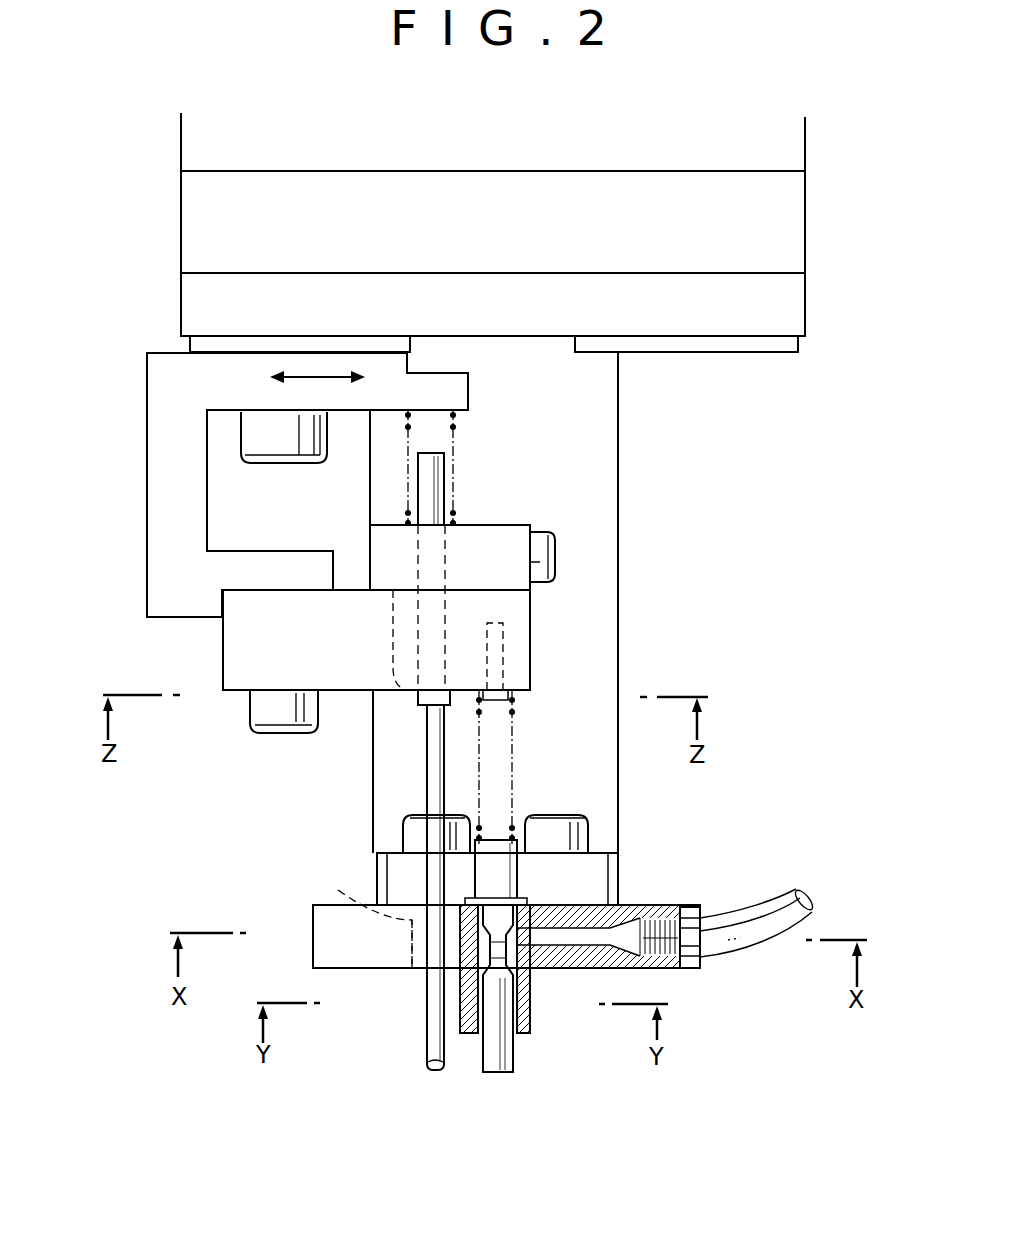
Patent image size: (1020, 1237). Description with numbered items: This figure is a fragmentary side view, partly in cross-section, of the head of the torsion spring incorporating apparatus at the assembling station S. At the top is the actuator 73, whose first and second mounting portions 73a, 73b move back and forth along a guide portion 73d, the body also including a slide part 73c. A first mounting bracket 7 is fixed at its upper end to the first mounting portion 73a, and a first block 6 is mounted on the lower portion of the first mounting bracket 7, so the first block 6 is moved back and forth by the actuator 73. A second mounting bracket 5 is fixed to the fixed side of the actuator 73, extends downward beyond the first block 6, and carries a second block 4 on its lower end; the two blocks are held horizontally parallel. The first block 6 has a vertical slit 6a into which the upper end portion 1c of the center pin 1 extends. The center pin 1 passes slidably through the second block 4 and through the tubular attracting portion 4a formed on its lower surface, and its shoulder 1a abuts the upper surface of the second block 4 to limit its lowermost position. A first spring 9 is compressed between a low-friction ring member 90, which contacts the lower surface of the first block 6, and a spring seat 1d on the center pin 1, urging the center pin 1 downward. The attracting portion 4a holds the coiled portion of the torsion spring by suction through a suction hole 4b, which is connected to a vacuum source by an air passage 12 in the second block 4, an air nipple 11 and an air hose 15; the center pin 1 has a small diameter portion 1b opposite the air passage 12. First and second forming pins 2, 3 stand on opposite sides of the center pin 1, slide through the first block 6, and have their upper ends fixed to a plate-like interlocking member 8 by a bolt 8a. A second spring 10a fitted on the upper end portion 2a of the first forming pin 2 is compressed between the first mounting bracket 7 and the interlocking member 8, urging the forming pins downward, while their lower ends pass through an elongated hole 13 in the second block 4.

The actuator 73 is at (174, 143).
The first mounting portion 73a is at (218, 343).
The second mounting portion 73b is at (737, 353).
The slide member 73c is at (786, 237).
The guide portion 73d is at (786, 304).
The first mounting bracket 7 is at (165, 428).
The second mounting bracket 5 is at (598, 423).
The second spring 10a is at (453, 422).
The upper end portion of first forming pin 2a is at (428, 485).
The interlocking member 8 is at (505, 540).
The bolt 8a is at (555, 540).
The assembling station S is at (770, 498).
The upper end portion of center pin 1c is at (495, 623).
The first block 6 is at (533, 652).
The vertical slit 6a is at (405, 696).
The ring member 90 is at (513, 697).
The first spring 9 is at (513, 828).
The shoulder 1a is at (468, 897).
The elongated hole 13 is at (367, 915).
The second block 4 is at (330, 918).
The spring seat 1d is at (497, 866).
The air passage 12 is at (567, 935).
The air nipple 11 is at (698, 906).
The air hose 15 is at (738, 942).
The suction hole 4b is at (463, 945).
The small diameter portion 1b is at (506, 952).
The attracting portion 4a is at (468, 1005).
The first forming pin 2 is at (434, 1040).
The second forming pin 3 is at (436, 1072).
The center pin 1 is at (505, 1075).